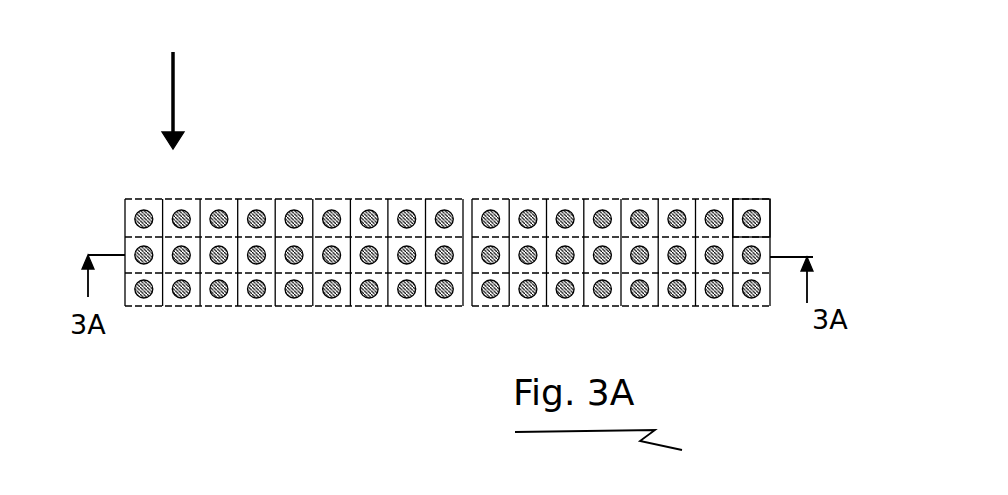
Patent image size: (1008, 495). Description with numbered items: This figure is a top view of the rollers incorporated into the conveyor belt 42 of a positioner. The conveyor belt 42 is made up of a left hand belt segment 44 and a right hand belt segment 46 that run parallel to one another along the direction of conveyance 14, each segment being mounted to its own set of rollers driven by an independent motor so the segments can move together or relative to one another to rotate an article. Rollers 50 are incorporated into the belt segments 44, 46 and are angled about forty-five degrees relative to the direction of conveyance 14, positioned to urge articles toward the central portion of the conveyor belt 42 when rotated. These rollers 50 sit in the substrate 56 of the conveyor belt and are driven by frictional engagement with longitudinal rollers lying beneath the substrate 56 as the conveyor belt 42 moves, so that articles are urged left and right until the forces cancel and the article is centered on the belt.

The direction of conveyance 14 is at (184, 88).
The conveyor belt 42 is at (457, 222).
The left hand belt segment 44 is at (613, 262).
The right hand belt segment 46 is at (323, 255).
The rollers 50 is at (716, 211).
The substrate 56 is at (764, 228).